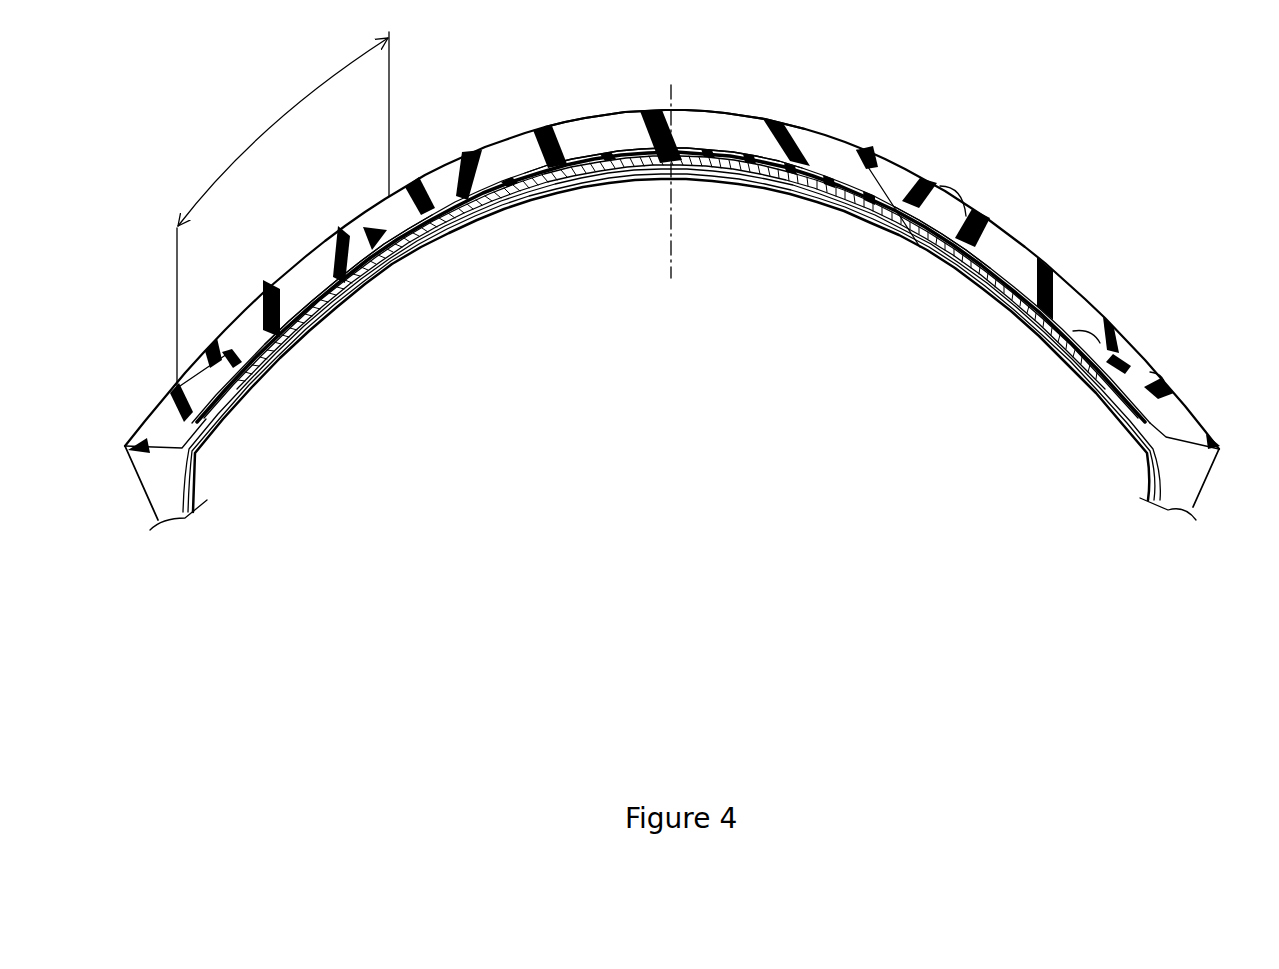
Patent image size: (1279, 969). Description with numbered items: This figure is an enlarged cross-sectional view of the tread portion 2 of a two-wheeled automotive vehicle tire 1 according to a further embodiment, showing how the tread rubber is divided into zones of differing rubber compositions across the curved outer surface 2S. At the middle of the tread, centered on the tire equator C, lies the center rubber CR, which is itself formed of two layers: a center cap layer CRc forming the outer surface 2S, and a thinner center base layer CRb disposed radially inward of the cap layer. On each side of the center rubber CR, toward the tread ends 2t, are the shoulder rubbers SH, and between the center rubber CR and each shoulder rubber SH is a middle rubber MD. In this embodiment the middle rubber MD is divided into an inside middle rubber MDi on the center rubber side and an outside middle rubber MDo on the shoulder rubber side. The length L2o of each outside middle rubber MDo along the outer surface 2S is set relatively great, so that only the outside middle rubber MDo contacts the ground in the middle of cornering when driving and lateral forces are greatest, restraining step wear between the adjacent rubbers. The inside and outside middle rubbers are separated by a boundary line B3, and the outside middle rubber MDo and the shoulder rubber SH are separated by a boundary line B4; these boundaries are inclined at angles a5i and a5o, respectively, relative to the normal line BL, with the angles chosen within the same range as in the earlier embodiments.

The two-wheeled automotive vehicle tire 1 is at (1120, 213).
The tread portion 2 is at (875, 147).
The outer surface of the tread portion 2S is at (757, 122).
The tread end 2t is at (125, 448).
The center rubber CR is at (677, 45).
The center cap layer CRc is at (587, 147).
The center base layer CRb is at (643, 153).
The middle rubber MD is at (1087, 99).
The inside middle rubber MDi is at (908, 187).
The outside middle rubber MDo is at (1025, 270).
The shoulder rubber SH is at (172, 427).
The normal line BL is at (912, 247).
The boundary line between the inside middle rubber and the outside middle rubber B3 is at (1007, 257).
The boundary line between the outside middle rubber and the shoulder rubber B4 is at (1073, 330).
The angle of the boundary line B3 relative to the normal line a5i is at (950, 217).
The angle of the boundary line B4 relative to the normal line a5o is at (1117, 377).
The tire equator C is at (672, 197).
The length of the outside middle rubber along the outer surface L2o is at (283, 209).